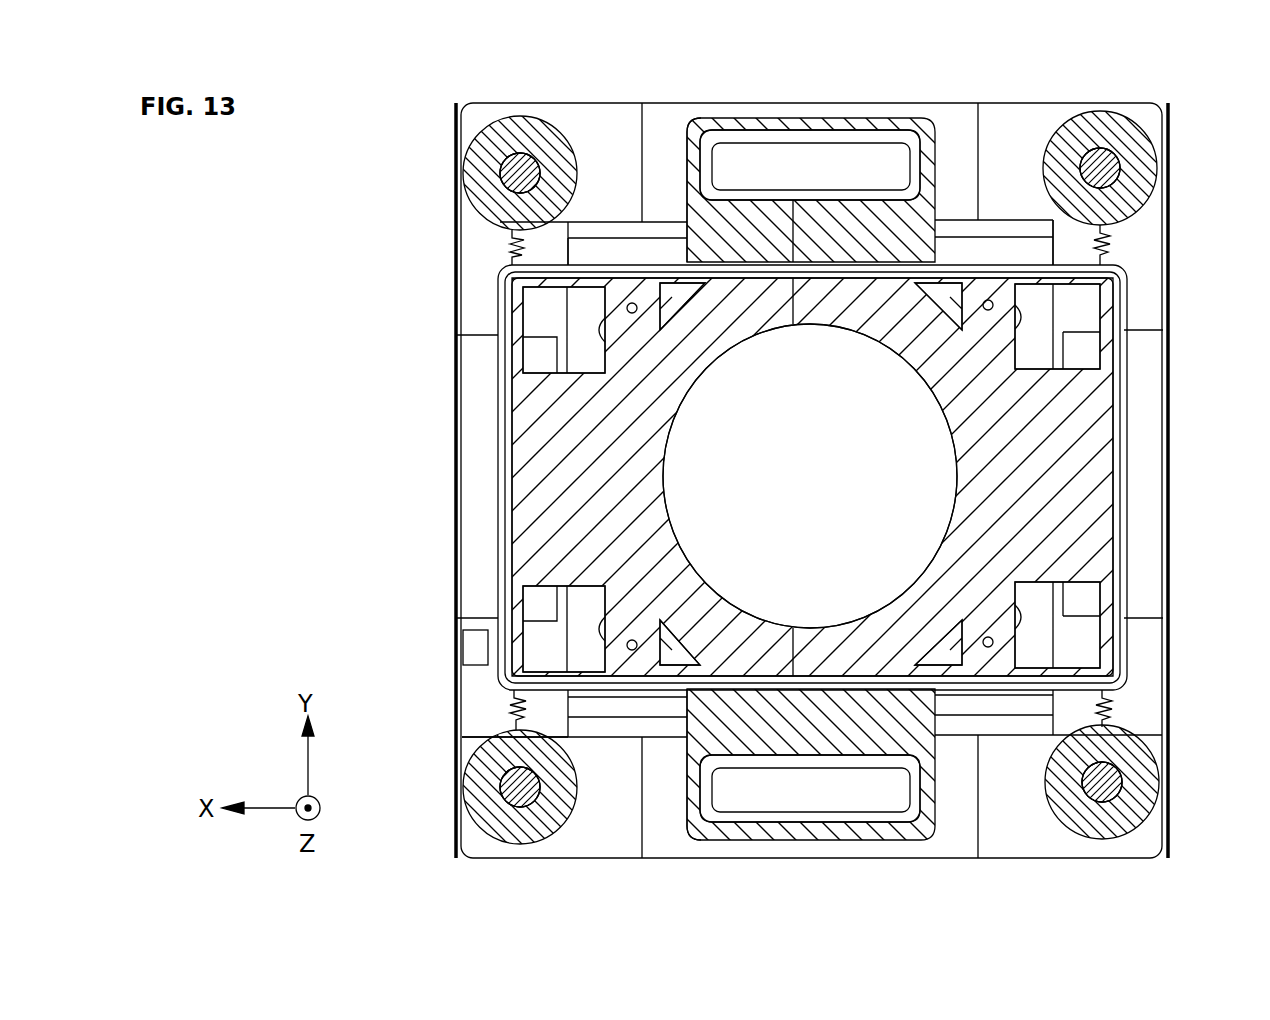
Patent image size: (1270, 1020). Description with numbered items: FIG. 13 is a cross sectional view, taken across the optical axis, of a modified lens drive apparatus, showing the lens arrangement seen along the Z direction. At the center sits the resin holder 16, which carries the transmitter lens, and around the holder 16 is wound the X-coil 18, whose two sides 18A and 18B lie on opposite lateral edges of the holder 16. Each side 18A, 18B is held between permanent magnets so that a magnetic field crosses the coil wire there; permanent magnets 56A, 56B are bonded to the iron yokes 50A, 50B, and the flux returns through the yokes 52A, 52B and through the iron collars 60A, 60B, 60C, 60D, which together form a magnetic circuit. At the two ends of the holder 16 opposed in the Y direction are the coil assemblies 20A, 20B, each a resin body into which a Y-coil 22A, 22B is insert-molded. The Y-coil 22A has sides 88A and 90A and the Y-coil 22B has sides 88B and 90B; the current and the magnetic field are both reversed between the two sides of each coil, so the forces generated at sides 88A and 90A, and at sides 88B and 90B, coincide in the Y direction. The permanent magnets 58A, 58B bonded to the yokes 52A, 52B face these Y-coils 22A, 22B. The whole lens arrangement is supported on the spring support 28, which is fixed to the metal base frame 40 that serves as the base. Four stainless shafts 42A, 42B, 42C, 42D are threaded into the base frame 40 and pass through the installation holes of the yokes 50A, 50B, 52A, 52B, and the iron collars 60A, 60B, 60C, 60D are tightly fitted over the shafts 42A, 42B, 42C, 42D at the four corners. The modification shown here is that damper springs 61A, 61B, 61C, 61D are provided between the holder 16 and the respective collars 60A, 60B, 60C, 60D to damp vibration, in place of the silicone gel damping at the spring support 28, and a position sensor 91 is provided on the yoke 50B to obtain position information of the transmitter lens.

The holder 16 is at (1127, 575).
The X-coil 18 is at (1125, 308).
The side of the X-coil 18A is at (1125, 430).
The side of the X-coil 18B is at (503, 505).
The coil assembly 20A is at (690, 762).
The coil assembly 20B is at (690, 142).
The Y-coil 22A is at (700, 840).
The Y-coil 22B is at (700, 130).
The spring support 28 is at (570, 250).
The base frame 40 is at (615, 236).
The shaft 42A is at (1105, 778).
The shaft 42B is at (525, 786).
The shaft 42C is at (1105, 170).
The shaft 42D is at (525, 175).
The yoke 50A is at (1163, 243).
The yoke 50B is at (462, 697).
The yoke 52A is at (1150, 858).
The yoke 52B is at (592, 103).
The permanent magnet 56A is at (1165, 485).
The permanent magnet 56B is at (457, 433).
The permanent magnet 58A is at (960, 858).
The permanent magnet 58B is at (963, 103).
The collar 60A is at (1140, 735).
The collar 60B is at (520, 845).
The collar 60C is at (1078, 114).
The collar 60D is at (500, 118).
The damper spring 61A is at (1112, 690).
The damper spring 61B is at (508, 708).
The damper spring 61C is at (1105, 250).
The damper spring 61D is at (507, 242).
The side of the Y-coil 88A is at (780, 822).
The side of the Y-coil 88B is at (802, 135).
The side of the Y-coil 90A is at (843, 765).
The side of the Y-coil 90B is at (865, 190).
The sensor 91 is at (463, 647).